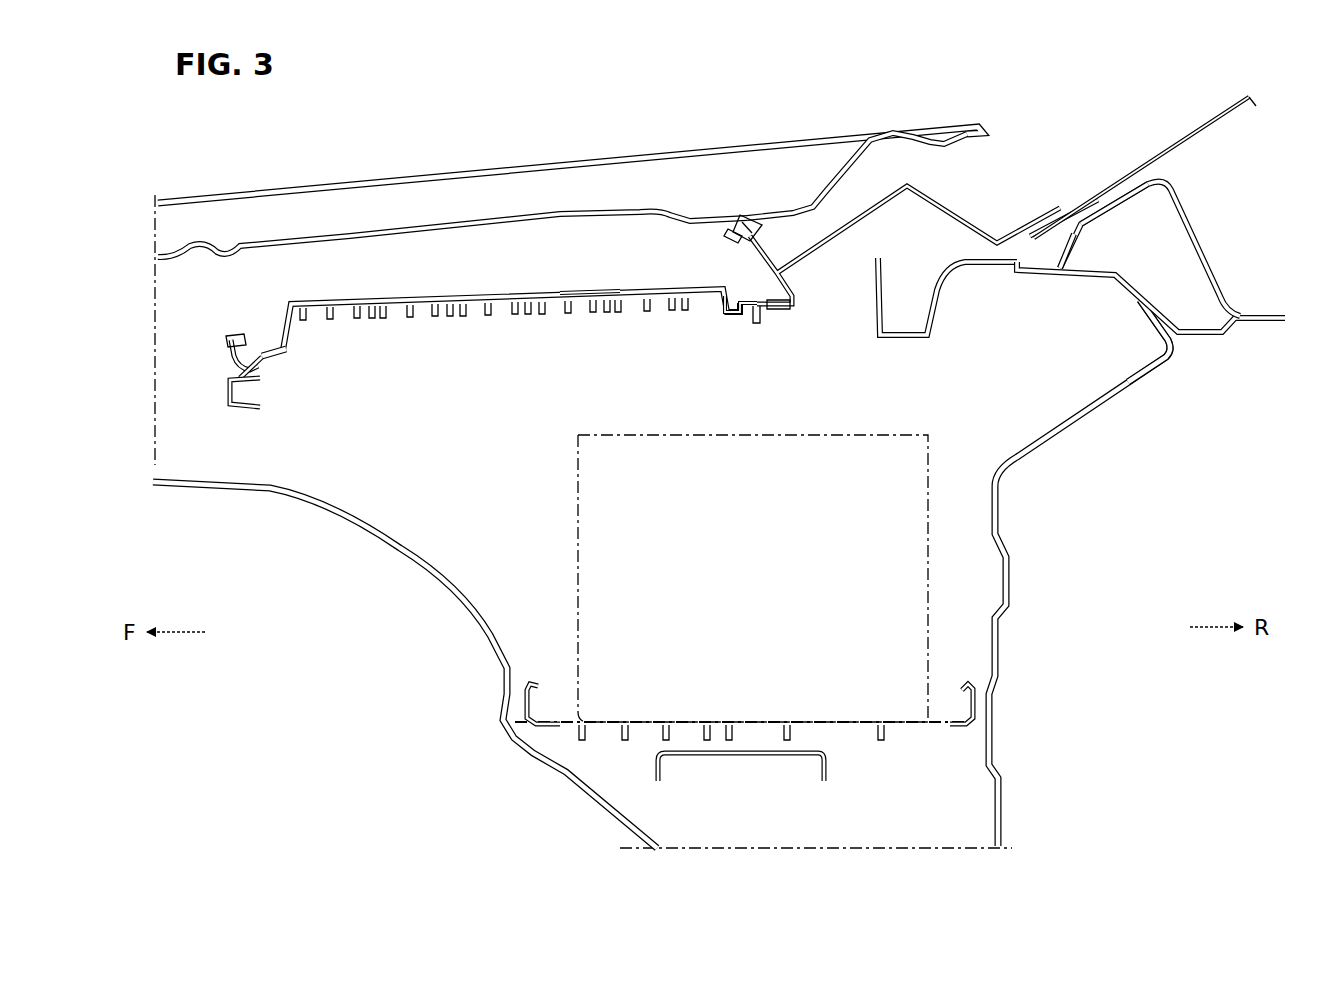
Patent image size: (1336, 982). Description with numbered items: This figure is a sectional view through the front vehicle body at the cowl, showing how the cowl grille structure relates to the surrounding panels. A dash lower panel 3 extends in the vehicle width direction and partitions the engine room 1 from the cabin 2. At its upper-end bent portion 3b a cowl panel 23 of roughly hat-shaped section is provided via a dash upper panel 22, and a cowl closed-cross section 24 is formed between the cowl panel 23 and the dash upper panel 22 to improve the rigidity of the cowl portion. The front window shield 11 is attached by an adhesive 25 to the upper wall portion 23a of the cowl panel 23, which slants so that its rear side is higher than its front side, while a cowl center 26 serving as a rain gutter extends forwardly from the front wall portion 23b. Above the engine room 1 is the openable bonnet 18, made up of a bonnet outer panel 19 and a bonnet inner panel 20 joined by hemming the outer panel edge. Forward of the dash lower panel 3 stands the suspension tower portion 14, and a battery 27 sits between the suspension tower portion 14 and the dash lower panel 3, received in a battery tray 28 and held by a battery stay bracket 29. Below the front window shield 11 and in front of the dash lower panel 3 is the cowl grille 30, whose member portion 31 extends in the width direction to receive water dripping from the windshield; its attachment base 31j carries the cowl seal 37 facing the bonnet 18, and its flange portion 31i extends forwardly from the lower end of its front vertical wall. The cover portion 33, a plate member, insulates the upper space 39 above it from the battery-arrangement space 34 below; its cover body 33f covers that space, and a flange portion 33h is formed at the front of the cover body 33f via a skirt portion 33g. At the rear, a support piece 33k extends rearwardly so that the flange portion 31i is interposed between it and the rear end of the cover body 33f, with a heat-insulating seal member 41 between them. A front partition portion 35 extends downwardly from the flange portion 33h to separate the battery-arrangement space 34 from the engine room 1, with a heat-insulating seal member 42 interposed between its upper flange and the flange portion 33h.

The engine room 1 is at (166, 450).
The cabin 2 is at (1167, 493).
The dash lower panel 3 is at (1010, 594).
The upper-end bent portion 3b is at (1152, 327).
The front window shield 11 is at (1180, 130).
The suspension tower portion 14 is at (336, 500).
The bonnet 18 is at (384, 183).
The bonnet outer panel 19 is at (470, 168).
The bonnet inner panel 20 is at (556, 210).
The dash upper panel 22 is at (1150, 292).
The cowl panel 23 is at (1183, 205).
The upper wall portion 23a is at (1103, 180).
The front wall portion 23b is at (1075, 275).
The cowl closed-cross section 24 is at (1149, 245).
The adhesive 25 is at (1066, 208).
The cowl center 26 is at (935, 322).
The battery 27 is at (578, 505).
The battery tray 28 is at (853, 735).
The battery stay bracket 29 is at (656, 768).
The cowl grille 30 is at (912, 176).
The member portion 31 is at (948, 192).
The flange portion 31i is at (790, 312).
The attachment base 31j is at (727, 244).
The cover portion 33 is at (520, 284).
The cover body 33f is at (586, 290).
The skirt portion 33g is at (280, 346).
The flange portion 33h is at (266, 348).
The support piece 33k is at (728, 314).
The battery-arrangement space 34 is at (451, 433).
The front partition portion 35 is at (223, 391).
The cowl seal 37 is at (758, 232).
The upper space 39 is at (377, 278).
The heat-insulating seal member 41 is at (757, 322).
The heat-insulating seal member 42 is at (278, 360).